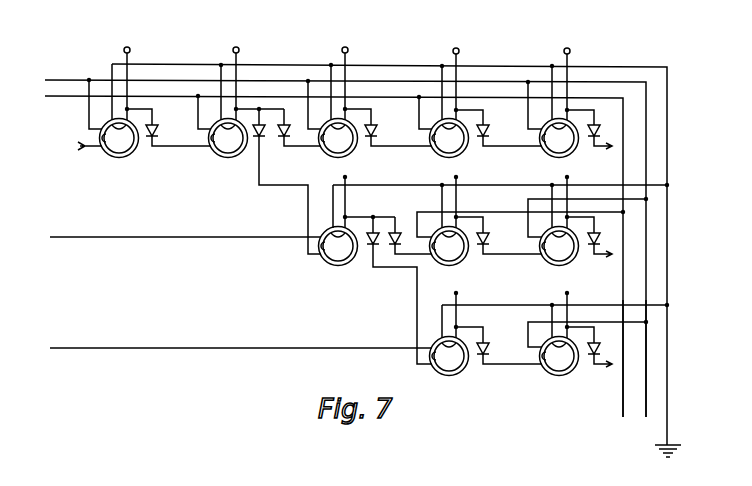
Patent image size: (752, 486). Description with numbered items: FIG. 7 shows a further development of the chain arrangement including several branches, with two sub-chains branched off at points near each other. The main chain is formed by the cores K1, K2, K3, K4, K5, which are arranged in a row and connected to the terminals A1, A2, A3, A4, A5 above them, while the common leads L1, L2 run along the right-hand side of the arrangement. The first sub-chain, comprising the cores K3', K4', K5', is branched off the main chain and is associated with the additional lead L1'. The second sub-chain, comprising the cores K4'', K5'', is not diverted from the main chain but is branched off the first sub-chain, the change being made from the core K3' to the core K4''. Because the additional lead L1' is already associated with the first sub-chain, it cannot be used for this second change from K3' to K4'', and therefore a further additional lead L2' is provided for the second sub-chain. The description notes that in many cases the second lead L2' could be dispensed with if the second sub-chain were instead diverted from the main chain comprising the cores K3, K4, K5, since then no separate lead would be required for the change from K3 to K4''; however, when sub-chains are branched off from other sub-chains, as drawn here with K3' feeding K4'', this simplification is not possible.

The anode terminal 1 A1 is at (130, 73).
The anode terminal 2 A2 is at (238, 73).
The anode terminal 3 A3 is at (347, 73).
The anode terminal 4 A4 is at (458, 73).
The anode terminal 5 A5 is at (569, 73).
The cold cathode tube K1 is at (132, 152).
The cold cathode tube K2 is at (237, 156).
The core K3 is at (369, 121).
The core K4 is at (479, 122).
The core K5 is at (569, 122).
The core K3' is at (376, 269).
The cold cathode tube K4' is at (486, 231).
The cold cathode tube K5' is at (576, 231).
The core K4'' is at (486, 344).
The cold cathode tube K5'' is at (576, 344).
The line L1 is at (646, 372).
The line L2 is at (621, 372).
The additional lead L1' is at (185, 223).
The further additional lead L2' is at (241, 335).